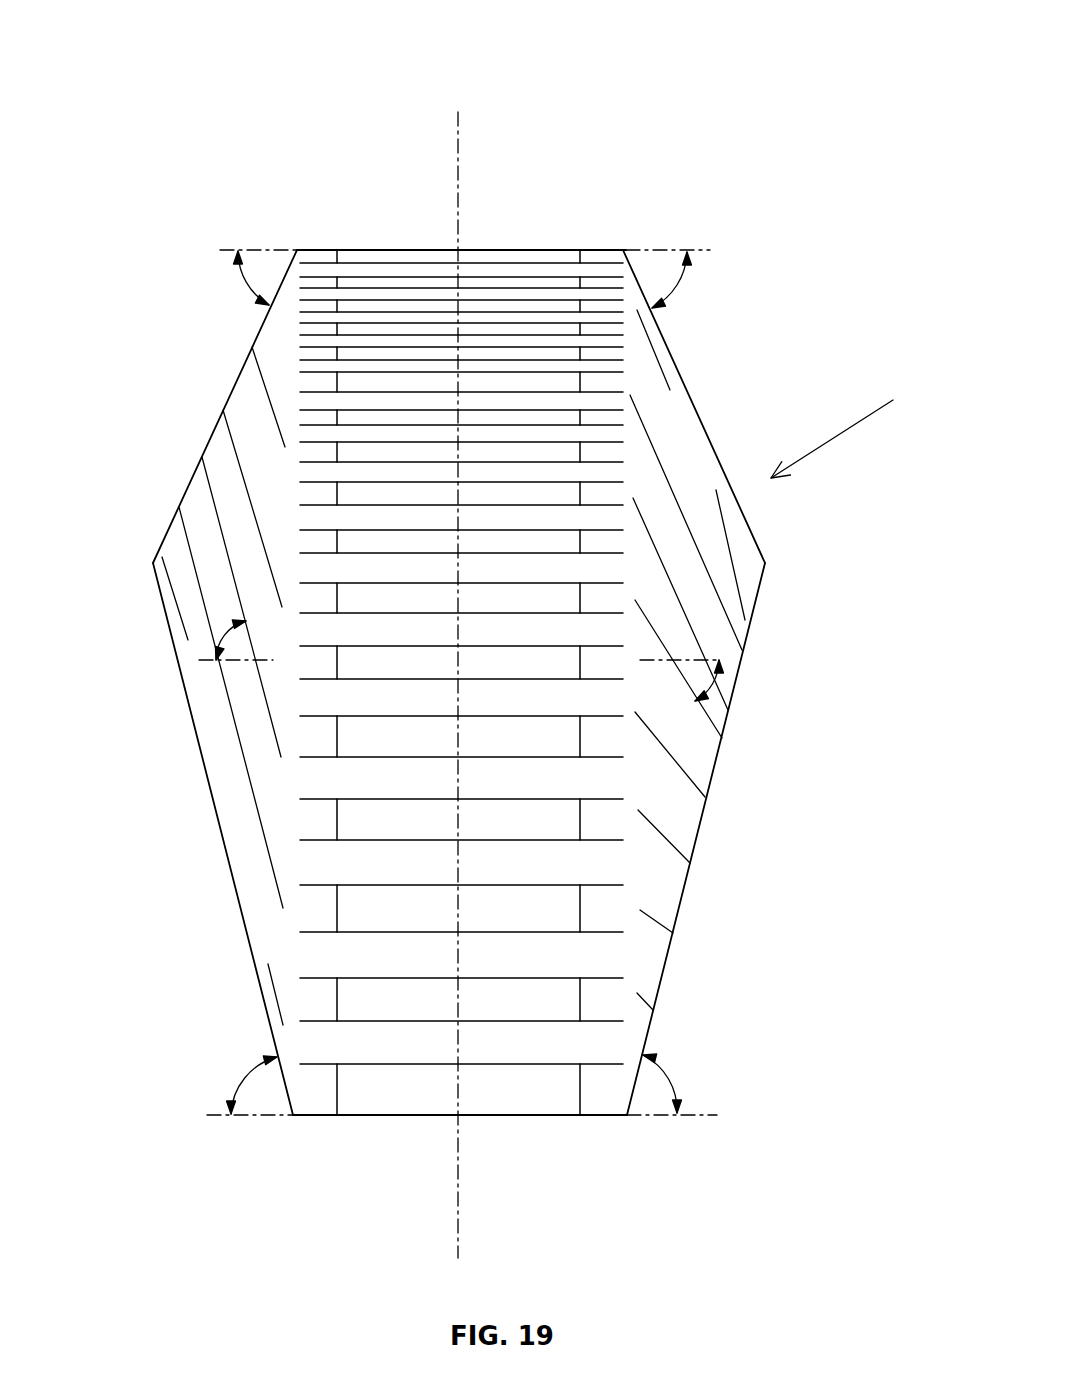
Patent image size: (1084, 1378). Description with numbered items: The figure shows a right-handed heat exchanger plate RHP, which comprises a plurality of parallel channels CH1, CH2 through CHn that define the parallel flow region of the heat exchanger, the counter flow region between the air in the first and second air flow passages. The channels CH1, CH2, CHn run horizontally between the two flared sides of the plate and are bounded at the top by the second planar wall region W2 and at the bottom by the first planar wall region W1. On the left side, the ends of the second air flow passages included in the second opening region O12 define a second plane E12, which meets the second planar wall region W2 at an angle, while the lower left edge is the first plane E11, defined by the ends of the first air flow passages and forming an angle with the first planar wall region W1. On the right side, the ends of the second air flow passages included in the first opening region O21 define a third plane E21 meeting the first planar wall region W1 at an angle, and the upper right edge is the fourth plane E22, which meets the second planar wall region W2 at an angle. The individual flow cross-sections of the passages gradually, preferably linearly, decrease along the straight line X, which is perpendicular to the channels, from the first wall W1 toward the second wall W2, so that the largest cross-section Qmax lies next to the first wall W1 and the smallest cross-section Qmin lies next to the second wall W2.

The channel CH1 is at (384, 271).
The channel CH2 is at (504, 296).
The channel CHn is at (432, 1042).
The first planar wall region W1 is at (507, 1122).
The second planar wall region W2 is at (547, 253).
The first plane E11 is at (230, 871).
The second plane E12 is at (230, 394).
The third plane E21 is at (686, 892).
The fourth plane E22 is at (700, 423).
The second opening region O12 is at (166, 482).
The first opening region O21 is at (778, 786).
The straight line X is at (450, 689).
The smallest individual flow cross-section Qmin is at (571, 252).
The largest individual flow cross-section Qmax is at (575, 1050).
The right-handed heat exchanger plate RHP is at (851, 415).